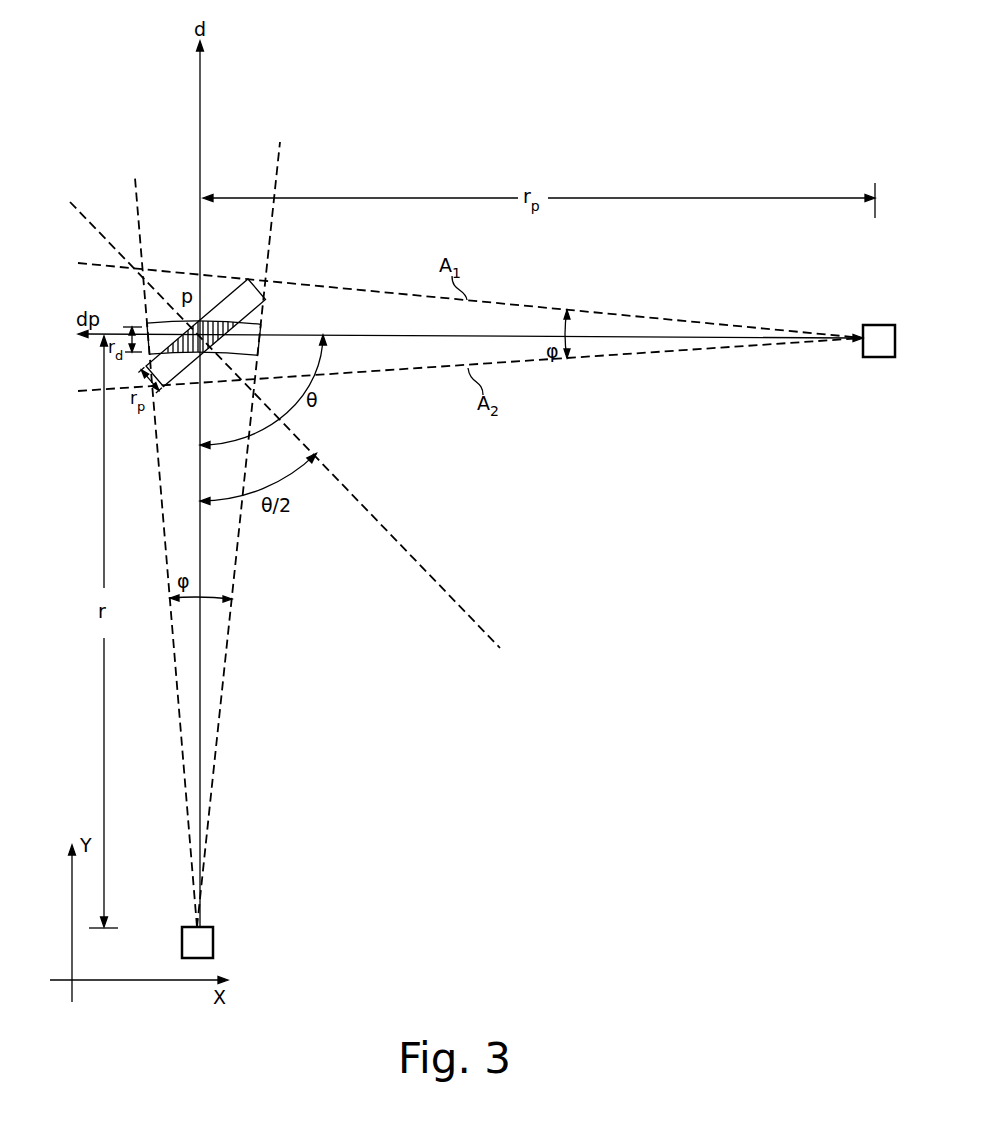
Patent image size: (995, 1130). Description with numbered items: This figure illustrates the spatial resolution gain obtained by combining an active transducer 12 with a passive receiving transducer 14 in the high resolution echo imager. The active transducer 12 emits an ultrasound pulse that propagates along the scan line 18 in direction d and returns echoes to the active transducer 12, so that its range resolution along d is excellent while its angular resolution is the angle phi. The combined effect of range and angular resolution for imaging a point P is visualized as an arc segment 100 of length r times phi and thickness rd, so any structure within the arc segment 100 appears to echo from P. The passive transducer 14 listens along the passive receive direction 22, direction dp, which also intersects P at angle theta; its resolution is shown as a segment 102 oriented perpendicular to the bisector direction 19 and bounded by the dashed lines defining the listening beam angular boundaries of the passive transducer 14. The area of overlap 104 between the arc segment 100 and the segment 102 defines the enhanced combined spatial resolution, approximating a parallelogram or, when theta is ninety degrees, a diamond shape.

The active transducer 12 is at (213, 935).
The passive receiving transducer 14 is at (879, 325).
The scan line 18 is at (201, 562).
The bisector direction 19 is at (386, 527).
The passive receive direction 22 is at (435, 334).
The arc segment 100 is at (262, 330).
The segment 102 is at (237, 297).
The area of overlap 104 is at (202, 353).